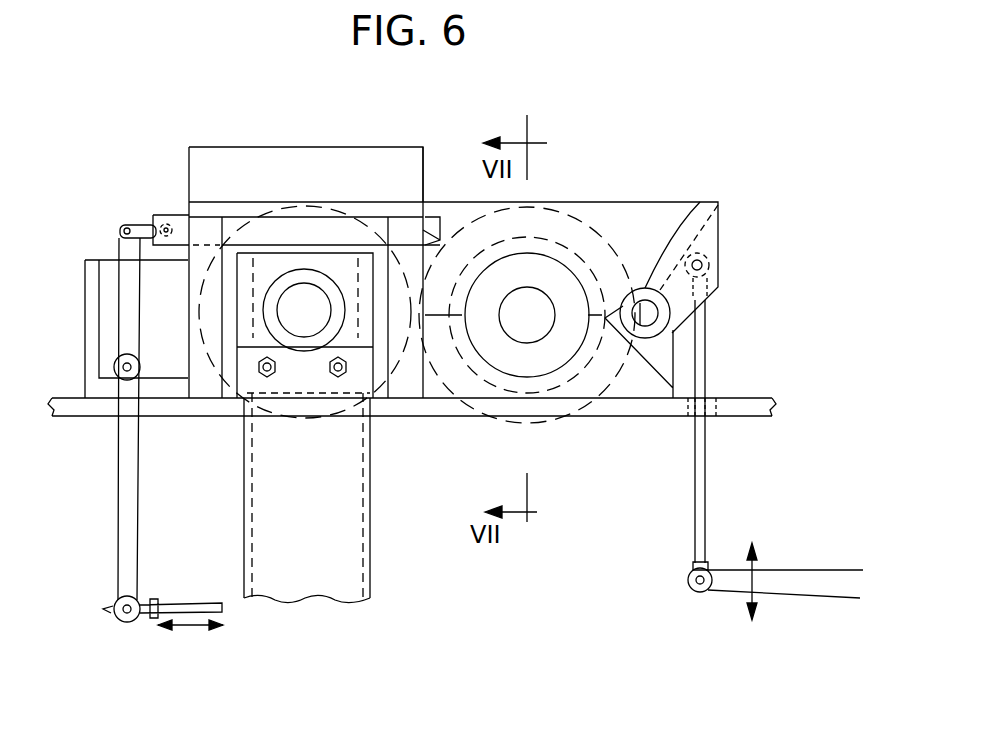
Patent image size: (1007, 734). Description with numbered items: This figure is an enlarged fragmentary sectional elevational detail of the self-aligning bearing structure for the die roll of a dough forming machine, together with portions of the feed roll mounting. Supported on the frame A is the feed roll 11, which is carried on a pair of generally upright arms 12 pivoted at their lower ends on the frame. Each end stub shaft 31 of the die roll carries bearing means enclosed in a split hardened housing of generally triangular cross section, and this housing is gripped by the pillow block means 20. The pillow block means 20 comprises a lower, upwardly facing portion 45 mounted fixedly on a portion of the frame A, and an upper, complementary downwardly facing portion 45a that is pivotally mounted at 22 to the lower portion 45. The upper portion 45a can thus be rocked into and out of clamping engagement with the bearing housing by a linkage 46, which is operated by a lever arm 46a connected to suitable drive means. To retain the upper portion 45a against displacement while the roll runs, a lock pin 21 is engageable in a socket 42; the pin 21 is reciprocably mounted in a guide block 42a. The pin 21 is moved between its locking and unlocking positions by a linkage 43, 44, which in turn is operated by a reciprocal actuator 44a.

The frame A is at (743, 408).
The feed roll 11 is at (195, 387).
The upright arms 12 is at (340, 572).
The pillow block means 20 is at (672, 196).
The lock pin 21 is at (180, 222).
The pivot 22 is at (645, 287).
The stub shaft 31 is at (522, 330).
The socket 42 is at (438, 213).
The guide block 42a is at (200, 163).
The linkage 43 is at (138, 229).
The linkage 44 is at (123, 255).
The reciprocal actuator 44a is at (190, 602).
The lower pillow block portion 45 is at (642, 377).
The upper pillow block portion 45a is at (630, 282).
The linkage 46 is at (702, 348).
The lever arm 46a is at (815, 582).